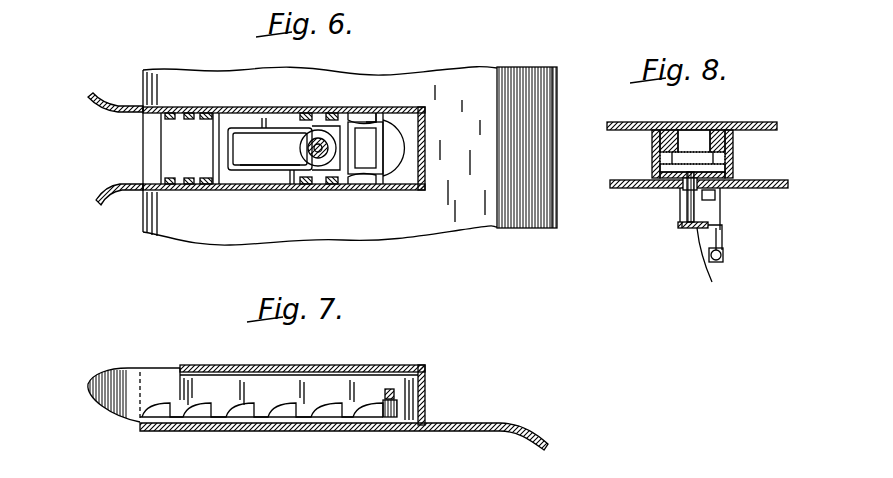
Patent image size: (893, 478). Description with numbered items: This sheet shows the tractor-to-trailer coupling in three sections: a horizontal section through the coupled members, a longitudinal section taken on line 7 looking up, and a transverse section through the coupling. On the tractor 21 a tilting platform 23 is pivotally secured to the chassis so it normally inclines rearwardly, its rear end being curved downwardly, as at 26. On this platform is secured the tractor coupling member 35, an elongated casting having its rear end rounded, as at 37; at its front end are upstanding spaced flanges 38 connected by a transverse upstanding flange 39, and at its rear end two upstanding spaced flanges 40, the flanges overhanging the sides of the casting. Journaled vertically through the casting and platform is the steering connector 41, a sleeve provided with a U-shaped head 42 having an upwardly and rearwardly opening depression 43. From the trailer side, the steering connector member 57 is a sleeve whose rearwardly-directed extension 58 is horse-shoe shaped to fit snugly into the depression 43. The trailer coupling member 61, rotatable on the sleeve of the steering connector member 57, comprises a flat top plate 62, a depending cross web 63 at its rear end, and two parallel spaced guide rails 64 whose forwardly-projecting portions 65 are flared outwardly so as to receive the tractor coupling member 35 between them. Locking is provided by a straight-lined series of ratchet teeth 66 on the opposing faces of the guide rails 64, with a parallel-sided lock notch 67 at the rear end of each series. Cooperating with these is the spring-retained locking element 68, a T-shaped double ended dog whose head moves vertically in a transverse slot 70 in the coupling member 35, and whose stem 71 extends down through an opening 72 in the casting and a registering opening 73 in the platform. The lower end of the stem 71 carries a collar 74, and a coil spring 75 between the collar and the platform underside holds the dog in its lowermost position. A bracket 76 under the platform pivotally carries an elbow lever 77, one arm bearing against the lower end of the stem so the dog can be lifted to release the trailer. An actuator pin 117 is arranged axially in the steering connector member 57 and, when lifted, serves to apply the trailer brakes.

In FIG. 6, the section line 7 is at (140, 122).
In FIG. 6, the tractor 21 is at (420, 74).
In FIG. 8, the tractor 21 is at (652, 160).
In FIG. 7, the tractor 21 is at (444, 374).
In FIG. 6, the tilting platform 23 is at (427, 230).
In FIG. 8, the tilting platform 23 is at (768, 189).
In FIG. 7, the tilting platform 23 is at (462, 432).
In FIG. 6, the downwardly curved rear end 26 is at (548, 213).
In FIG. 7, the downwardly curved rear end 26 is at (534, 434).
In FIG. 6, the coupling member 35 is at (272, 162).
In FIG. 8, the coupling member 35 is at (673, 191).
In FIG. 6, the rounded rear end 37 is at (427, 166).
In FIG. 6, the upstanding spaced flanges 38 is at (263, 120).
In FIG. 6, the transverse upstanding flange 39 is at (228, 147).
In FIG. 6, the upstanding spaced flanges 40 is at (380, 120).
In FIG. 8, the upstanding spaced flanges 40 is at (714, 142).
In FIG. 6, the steering connector 41 is at (360, 101).
In FIG. 6, the U-shaped head 42 is at (306, 112).
In FIG. 6, the U-shaped depression 43 is at (326, 172).
In FIG. 6, the steering connector member 57 is at (300, 147).
In FIG. 6, the rearwardly-directed extension 58 is at (343, 151).
In FIG. 6, the trailer coupling member 61 is at (416, 190).
In FIG. 8, the trailer coupling member 61 is at (734, 160).
In FIG. 7, the trailer coupling member 61 is at (402, 365).
In FIG. 7, the flat top plate 62 is at (296, 365).
In FIG. 6, the depending cross web 63 is at (427, 142).
In FIG. 7, the depending cross web 63 is at (427, 396).
In FIG. 6, the guide rails 64 is at (225, 106).
In FIG. 7, the guide rails 64 is at (216, 388).
In FIG. 6, the forwardly-projecting portions 65 is at (112, 105).
In FIG. 7, the forwardly-projecting portions 65 is at (138, 368).
In FIG. 6, the ratchet teeth 66 is at (185, 122).
In FIG. 7, the ratchet teeth 66 is at (197, 412).
In FIG. 8, the lock notch 67 is at (726, 165).
In FIG. 7, the lock notch 67 is at (386, 399).
In FIG. 6, the locking element 68 is at (430, 112).
In FIG. 8, the locking element 68 is at (722, 197).
In FIG. 7, the locking element 68 is at (394, 424).
In FIG. 8, the transverse slot 70 is at (732, 128).
In FIG. 8, the stem 71 is at (689, 226).
In FIG. 8, the opening 72 is at (690, 170).
In FIG. 8, the registering opening 73 is at (680, 226).
In FIG. 8, the collar 74 is at (714, 265).
In FIG. 8, the coil spring 75 is at (716, 216).
In FIG. 8, the bracket 76 is at (681, 220).
In FIG. 8, the elbow lever 77 is at (724, 260).
In FIG. 6, the actuator pin 117 is at (322, 128).